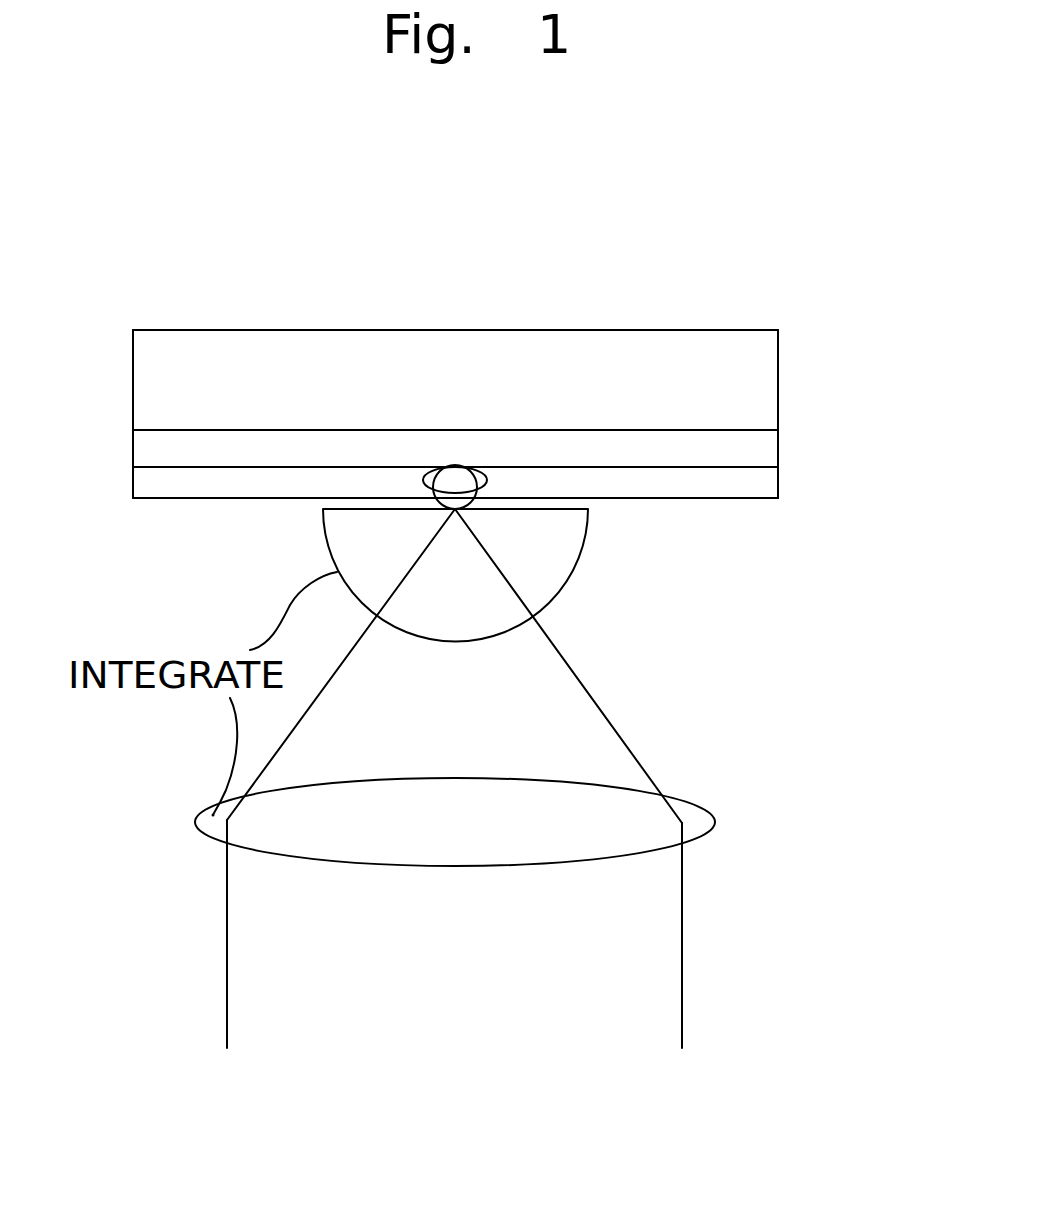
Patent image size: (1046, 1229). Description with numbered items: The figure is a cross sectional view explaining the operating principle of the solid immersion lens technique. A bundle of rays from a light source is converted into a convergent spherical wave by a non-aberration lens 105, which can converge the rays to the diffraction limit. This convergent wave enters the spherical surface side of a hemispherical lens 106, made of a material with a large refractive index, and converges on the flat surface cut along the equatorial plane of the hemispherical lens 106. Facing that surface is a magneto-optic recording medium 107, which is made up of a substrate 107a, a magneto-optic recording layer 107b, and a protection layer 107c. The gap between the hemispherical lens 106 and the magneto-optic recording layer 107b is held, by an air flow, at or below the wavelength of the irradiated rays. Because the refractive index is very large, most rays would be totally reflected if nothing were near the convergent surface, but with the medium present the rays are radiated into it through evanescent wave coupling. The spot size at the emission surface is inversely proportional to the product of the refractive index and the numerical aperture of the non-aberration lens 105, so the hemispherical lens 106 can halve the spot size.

The non-aberration lens 105 is at (638, 815).
The hemispherical lens 106 is at (563, 557).
The magneto-optic recording medium 107 is at (133, 386).
The substrate 107a is at (730, 340).
The magneto-optic recording layer 107b is at (760, 447).
The protection layer 107c is at (237, 482).